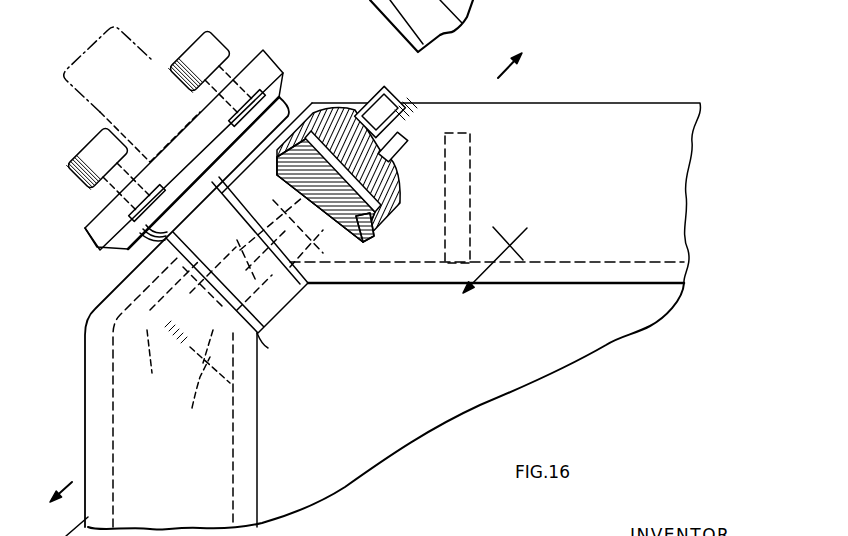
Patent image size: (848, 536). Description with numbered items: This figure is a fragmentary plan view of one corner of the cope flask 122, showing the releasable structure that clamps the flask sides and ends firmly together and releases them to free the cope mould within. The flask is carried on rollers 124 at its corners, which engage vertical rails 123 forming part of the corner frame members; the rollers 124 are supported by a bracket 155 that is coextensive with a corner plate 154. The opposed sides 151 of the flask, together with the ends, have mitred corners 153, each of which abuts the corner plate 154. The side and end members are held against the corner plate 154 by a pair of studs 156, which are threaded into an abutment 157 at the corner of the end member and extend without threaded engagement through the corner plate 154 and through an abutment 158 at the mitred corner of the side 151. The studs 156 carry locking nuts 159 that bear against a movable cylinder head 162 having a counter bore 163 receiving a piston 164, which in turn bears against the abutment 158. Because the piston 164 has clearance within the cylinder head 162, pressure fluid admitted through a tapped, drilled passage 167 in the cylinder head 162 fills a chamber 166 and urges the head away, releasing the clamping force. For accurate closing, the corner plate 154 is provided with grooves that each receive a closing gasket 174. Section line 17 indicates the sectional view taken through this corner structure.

The cope flask 122 is at (722, 300).
The rails 123 is at (140, 60).
The rollers 124 is at (215, 52).
The sides 151 is at (637, 123).
The mitred corners 153 is at (268, 94).
The corner plate 154 is at (283, 311).
The bracket 155 is at (260, 70).
The studs 156 is at (192, 393).
The abutment 157 is at (186, 360).
The abutment 158 is at (363, 250).
The locking nuts 159 is at (400, 120).
The cylinder head 162 is at (327, 110).
The counter bore 163 is at (381, 204).
The piston 164 is at (378, 233).
The chamber 166 is at (375, 182).
The drilled passage 167 is at (413, 155).
The closing gasket 174 is at (315, 288).
The section line 17 is at (502, 257).